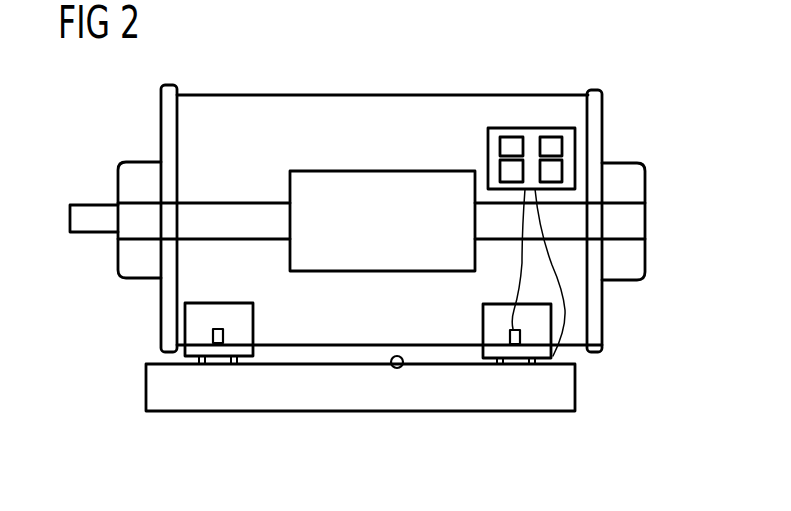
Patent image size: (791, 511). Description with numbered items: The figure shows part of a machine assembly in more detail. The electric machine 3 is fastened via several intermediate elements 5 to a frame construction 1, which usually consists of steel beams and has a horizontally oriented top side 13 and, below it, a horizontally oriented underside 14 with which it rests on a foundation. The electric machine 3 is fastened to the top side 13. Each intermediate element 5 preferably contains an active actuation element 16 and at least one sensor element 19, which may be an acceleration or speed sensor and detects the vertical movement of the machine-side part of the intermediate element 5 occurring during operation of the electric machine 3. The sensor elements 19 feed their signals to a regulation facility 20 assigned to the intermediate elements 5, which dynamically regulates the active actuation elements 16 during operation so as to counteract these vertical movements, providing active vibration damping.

The frame construction 1 is at (358, 262).
The electric machine 3 is at (352, 110).
The intermediate element 5 is at (178, 313).
The top side 13 is at (405, 368).
The underside 14 is at (350, 413).
The active actuation element 16 is at (220, 364).
The sensor element 19 is at (215, 338).
The regulation facility 20 is at (530, 127).